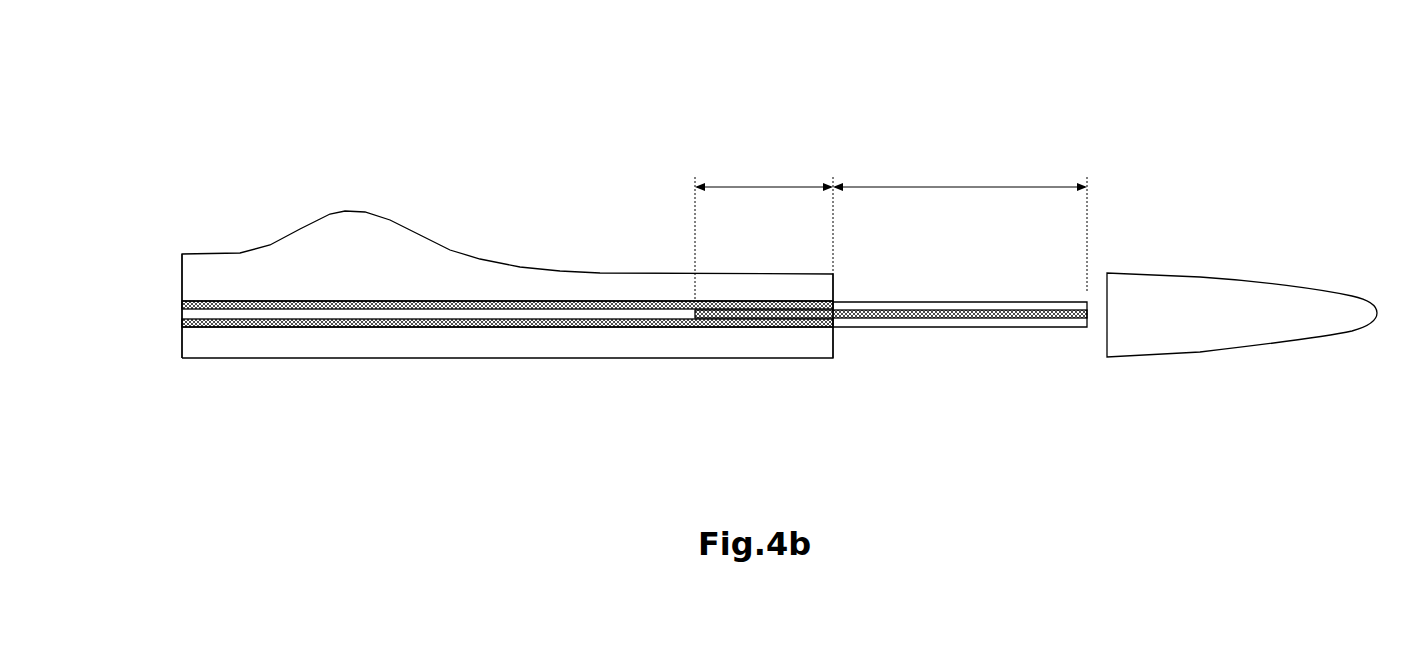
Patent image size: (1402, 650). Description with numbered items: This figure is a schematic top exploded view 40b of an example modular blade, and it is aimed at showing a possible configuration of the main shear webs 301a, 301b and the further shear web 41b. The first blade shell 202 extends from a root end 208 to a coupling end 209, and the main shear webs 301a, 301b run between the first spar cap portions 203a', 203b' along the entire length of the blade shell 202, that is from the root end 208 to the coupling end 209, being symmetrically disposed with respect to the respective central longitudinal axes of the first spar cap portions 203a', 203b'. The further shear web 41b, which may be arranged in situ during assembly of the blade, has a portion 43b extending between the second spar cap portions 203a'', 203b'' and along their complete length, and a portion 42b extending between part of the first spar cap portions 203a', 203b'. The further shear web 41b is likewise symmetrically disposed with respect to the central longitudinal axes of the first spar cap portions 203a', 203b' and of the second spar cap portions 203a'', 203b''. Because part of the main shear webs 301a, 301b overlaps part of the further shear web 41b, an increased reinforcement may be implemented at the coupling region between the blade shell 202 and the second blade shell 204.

The view 40b is at (203, 127).
The blade shell 202 is at (441, 268).
The root end 208 is at (186, 341).
The coupling end 209 is at (833, 338).
The main shear web 301a is at (555, 328).
The main shear web 301b is at (557, 300).
The first spar cap portion 203a' is at (507, 372).
The first spar cap portion 203b' is at (507, 372).
The further shear web 41b is at (925, 316).
The second spar cap portion 203a'' is at (891, 379).
The second spar cap portion 203b'' is at (891, 379).
The blade shell 204 is at (1203, 300).
The portion 42b is at (764, 226).
The portion 43b is at (960, 223).